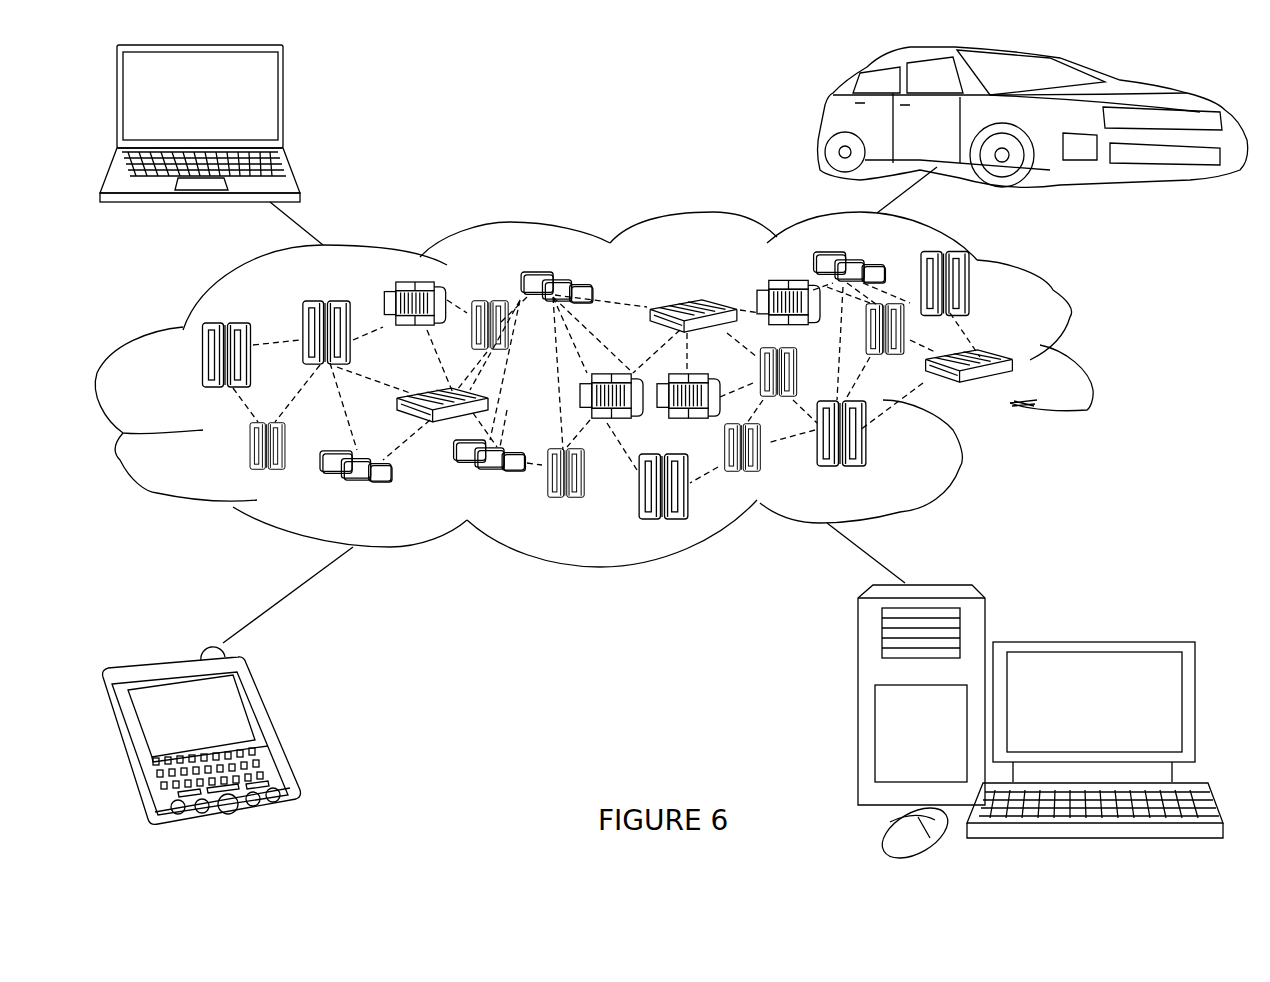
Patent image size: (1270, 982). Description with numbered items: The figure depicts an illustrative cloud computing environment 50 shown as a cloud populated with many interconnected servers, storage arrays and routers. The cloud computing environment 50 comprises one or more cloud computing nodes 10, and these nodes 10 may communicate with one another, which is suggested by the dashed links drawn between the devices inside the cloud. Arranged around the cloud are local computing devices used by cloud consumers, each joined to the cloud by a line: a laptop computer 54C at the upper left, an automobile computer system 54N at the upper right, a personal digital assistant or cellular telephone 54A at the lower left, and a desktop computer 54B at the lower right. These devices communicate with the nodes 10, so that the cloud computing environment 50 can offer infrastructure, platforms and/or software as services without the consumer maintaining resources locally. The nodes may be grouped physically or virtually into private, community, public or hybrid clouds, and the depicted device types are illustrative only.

The laptop computer 54C is at (300, 100).
The automobile computer system 54N is at (820, 118).
The personal digital assistant or cellular telephone 54A is at (272, 728).
The desktop computer 54B is at (1092, 638).
The cloud computing environment 50 is at (1088, 362).
The cloud computing node 10 is at (1087, 407).